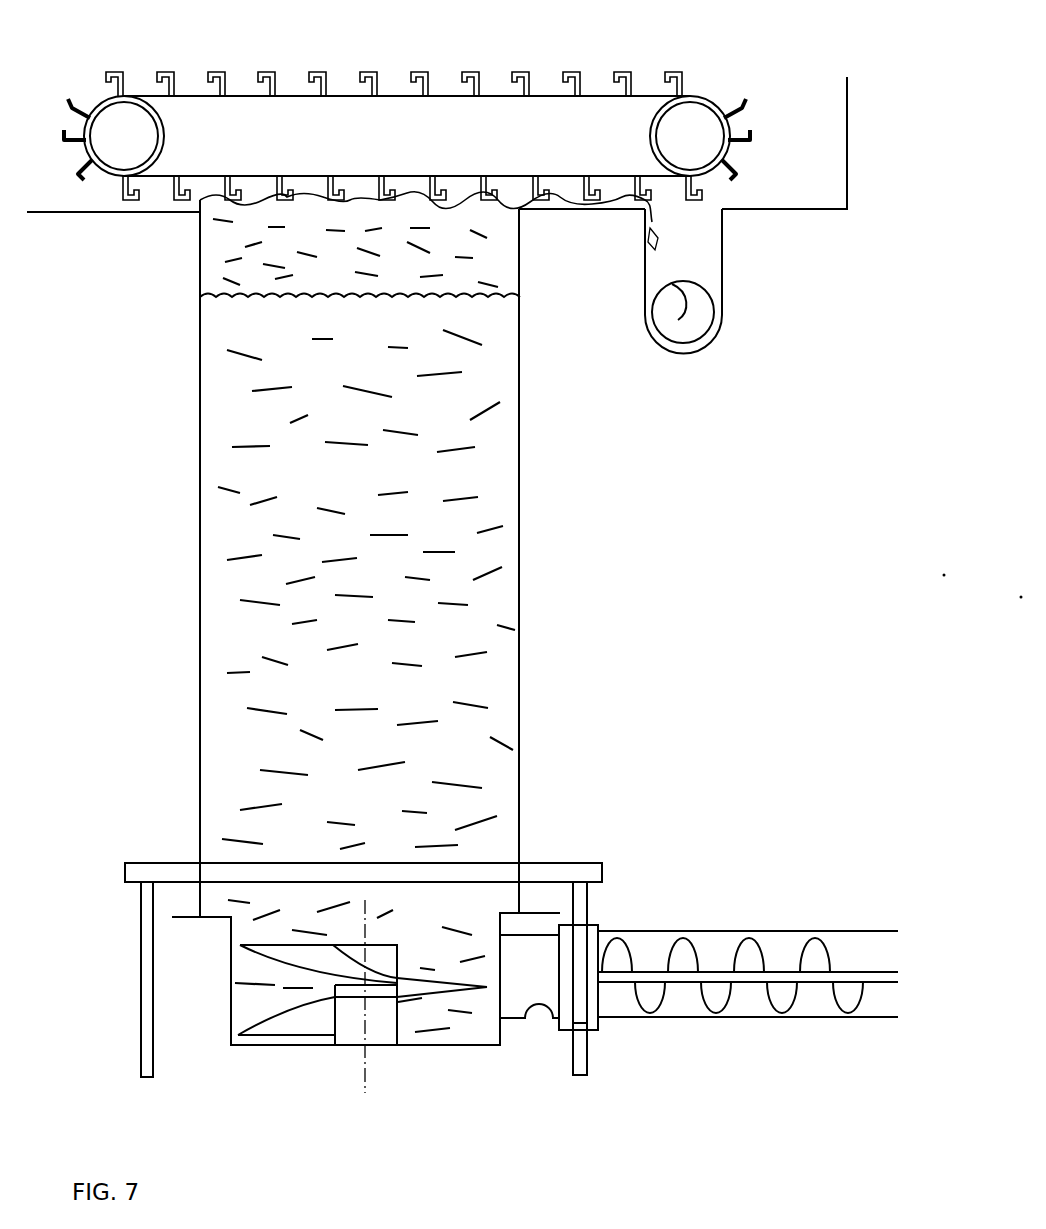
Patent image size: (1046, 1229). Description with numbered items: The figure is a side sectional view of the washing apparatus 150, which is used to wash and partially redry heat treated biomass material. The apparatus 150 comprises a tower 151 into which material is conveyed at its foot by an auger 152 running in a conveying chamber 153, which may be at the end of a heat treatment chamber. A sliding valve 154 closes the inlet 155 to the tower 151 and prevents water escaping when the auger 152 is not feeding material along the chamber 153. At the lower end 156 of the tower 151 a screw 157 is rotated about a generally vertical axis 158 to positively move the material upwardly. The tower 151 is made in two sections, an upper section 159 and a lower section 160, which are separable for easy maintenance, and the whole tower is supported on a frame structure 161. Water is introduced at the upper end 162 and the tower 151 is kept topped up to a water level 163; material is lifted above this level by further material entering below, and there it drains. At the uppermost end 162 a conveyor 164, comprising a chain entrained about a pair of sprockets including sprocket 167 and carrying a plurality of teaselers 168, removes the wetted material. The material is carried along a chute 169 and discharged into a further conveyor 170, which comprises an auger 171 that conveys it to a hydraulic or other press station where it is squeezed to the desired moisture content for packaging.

The washing apparatus 150 is at (374, 563).
The tower 151 is at (198, 518).
The auger 152 is at (783, 1005).
The conveying chamber 153 is at (690, 1020).
The sliding valve 154 is at (578, 920).
The inlet 155 is at (553, 1012).
The lower end 156 is at (127, 115).
The screw 157 is at (408, 973).
The vertical axis 158 is at (321, 1010).
The upper section 159 is at (198, 720).
The lower section 160 is at (231, 1003).
The frame structure 161 is at (141, 945).
The upper end 162 is at (198, 203).
The water level 163 is at (468, 297).
The conveyor 164 is at (450, 95).
The sprocket 167 is at (693, 114).
The teaselers 168 is at (292, 177).
The chute 169 is at (560, 210).
The further conveyor 170 is at (729, 333).
The auger 171 is at (681, 325).